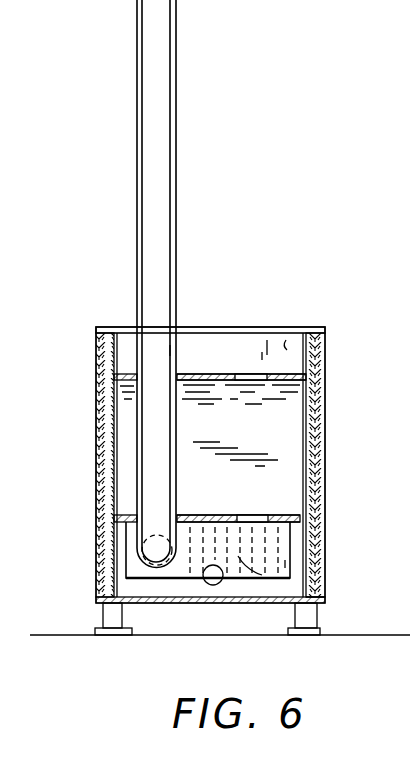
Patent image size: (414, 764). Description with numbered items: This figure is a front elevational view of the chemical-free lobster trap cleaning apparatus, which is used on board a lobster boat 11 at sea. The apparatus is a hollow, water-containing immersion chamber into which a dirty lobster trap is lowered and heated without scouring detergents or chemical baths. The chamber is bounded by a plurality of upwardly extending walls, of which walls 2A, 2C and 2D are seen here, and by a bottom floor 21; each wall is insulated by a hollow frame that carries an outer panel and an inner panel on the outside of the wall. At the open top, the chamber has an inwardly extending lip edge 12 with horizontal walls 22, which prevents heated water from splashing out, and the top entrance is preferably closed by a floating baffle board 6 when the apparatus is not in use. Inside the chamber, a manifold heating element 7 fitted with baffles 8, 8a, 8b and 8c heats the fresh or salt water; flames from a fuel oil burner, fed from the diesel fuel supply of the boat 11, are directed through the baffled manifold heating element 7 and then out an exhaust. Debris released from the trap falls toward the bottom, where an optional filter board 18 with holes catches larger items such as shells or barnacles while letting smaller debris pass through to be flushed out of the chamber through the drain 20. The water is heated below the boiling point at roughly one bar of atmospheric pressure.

The wall 2A is at (262, 428).
The wall 2C is at (96, 465).
The wall 2D is at (326, 352).
The floating baffle board 6 is at (213, 361).
The manifold heating element 7 is at (126, 563).
The baffle 8 is at (245, 567).
The baffle 8a is at (322, 597).
The baffle 8b is at (285, 563).
The baffle 8c is at (278, 545).
The lobster boat 11 is at (62, 635).
The inwardly extending lip edge 12 is at (255, 328).
The filter board 18 is at (275, 509).
The drain 20 is at (213, 585).
The bottom floor 21 is at (150, 603).
The horizontal walls 22 is at (284, 343).